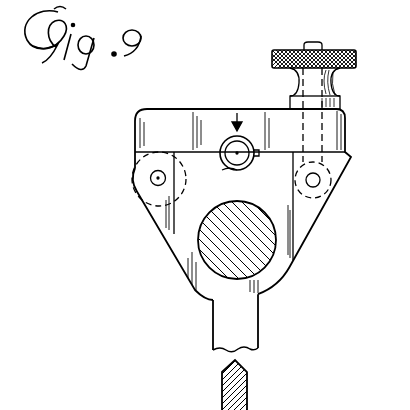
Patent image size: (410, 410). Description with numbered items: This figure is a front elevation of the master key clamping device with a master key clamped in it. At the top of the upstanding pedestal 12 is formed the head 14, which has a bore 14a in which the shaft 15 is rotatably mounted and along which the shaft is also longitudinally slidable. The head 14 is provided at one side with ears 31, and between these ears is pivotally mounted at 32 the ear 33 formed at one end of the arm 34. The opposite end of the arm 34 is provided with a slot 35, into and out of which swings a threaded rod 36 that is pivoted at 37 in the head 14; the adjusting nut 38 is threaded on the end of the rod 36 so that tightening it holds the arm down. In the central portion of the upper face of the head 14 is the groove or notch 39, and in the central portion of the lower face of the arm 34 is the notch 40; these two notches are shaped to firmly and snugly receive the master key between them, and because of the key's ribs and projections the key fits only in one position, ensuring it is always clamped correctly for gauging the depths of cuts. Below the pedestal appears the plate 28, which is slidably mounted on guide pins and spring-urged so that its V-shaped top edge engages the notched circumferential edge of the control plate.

The pedestal 12 is at (252, 330).
The head 14 is at (370, 229).
The bore 14a is at (352, 302).
The shaft 15 is at (199, 240).
The plate 28 is at (232, 388).
The ears 31 is at (135, 170).
The pivot 32 is at (151, 181).
The ear 33 is at (134, 151).
The arm 34 is at (195, 95).
The slot 35 is at (396, 402).
The threaded rod 36 is at (319, 42).
The pivot 37 is at (318, 180).
The adjusting nut 38 is at (356, 58).
The groove or notch 39 is at (222, 168).
The notch 40 is at (232, 128).